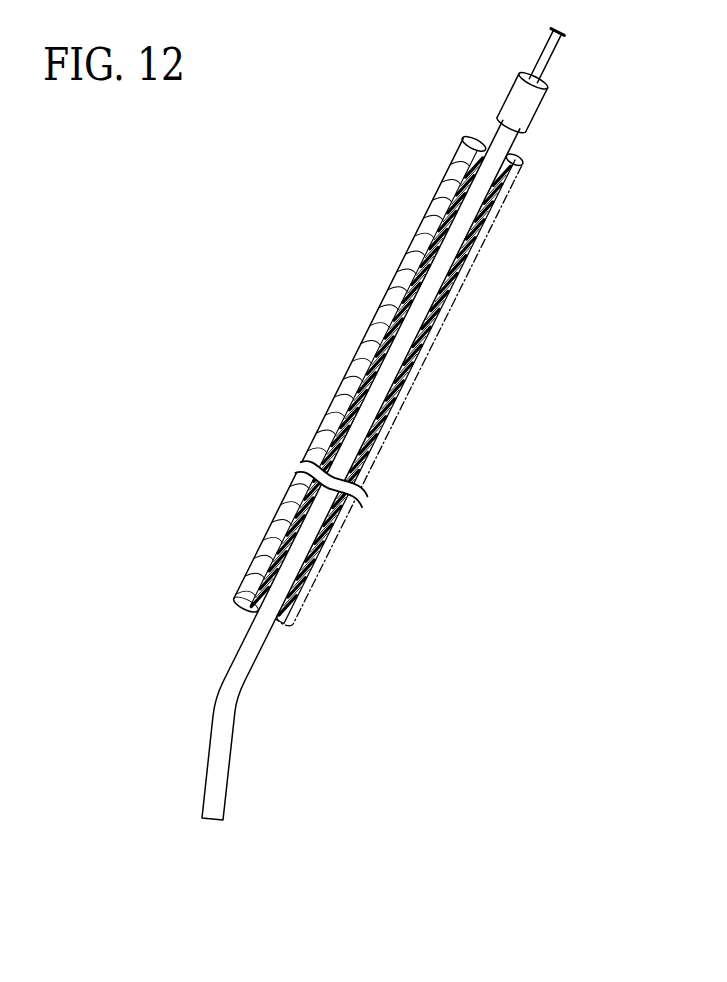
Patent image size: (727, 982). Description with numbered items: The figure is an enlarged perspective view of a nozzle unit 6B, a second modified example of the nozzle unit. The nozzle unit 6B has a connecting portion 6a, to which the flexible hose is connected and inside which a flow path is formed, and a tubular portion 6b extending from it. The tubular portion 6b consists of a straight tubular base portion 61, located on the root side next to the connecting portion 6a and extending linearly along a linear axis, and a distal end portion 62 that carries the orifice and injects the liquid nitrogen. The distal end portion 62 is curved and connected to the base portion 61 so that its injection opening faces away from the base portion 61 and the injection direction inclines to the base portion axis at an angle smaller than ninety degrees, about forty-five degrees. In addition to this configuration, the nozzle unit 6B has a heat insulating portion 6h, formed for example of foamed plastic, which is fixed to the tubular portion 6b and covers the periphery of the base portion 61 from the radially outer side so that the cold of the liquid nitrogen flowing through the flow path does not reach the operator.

The nozzle unit 6B is at (445, 113).
The connecting portion 6a is at (527, 117).
The tubular portion 6b is at (437, 280).
The heat insulating portion 6h is at (348, 390).
The base portion 61 is at (422, 316).
The distal end portion 62 is at (228, 774).